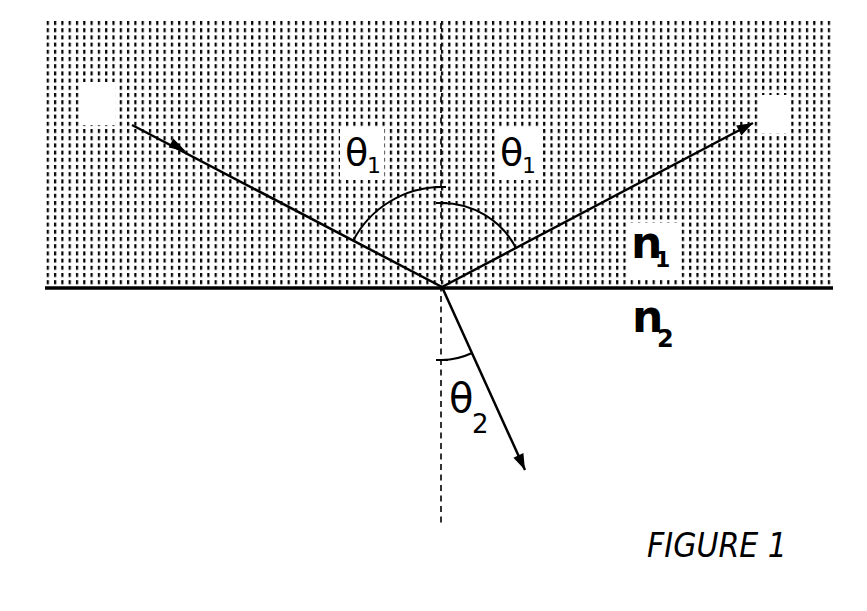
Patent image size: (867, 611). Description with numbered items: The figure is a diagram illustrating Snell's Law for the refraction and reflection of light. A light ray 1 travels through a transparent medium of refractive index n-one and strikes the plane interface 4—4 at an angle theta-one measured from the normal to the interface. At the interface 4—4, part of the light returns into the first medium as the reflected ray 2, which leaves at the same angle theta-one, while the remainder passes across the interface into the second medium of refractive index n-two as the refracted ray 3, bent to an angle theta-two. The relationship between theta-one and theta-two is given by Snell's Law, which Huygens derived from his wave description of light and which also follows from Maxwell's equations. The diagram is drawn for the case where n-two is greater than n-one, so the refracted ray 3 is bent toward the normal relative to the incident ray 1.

The light ray 1 is at (265, 191).
The reflected ray 2 is at (611, 196).
The refracted ray 3 is at (493, 395).
The plane interface 4 is at (437, 283).